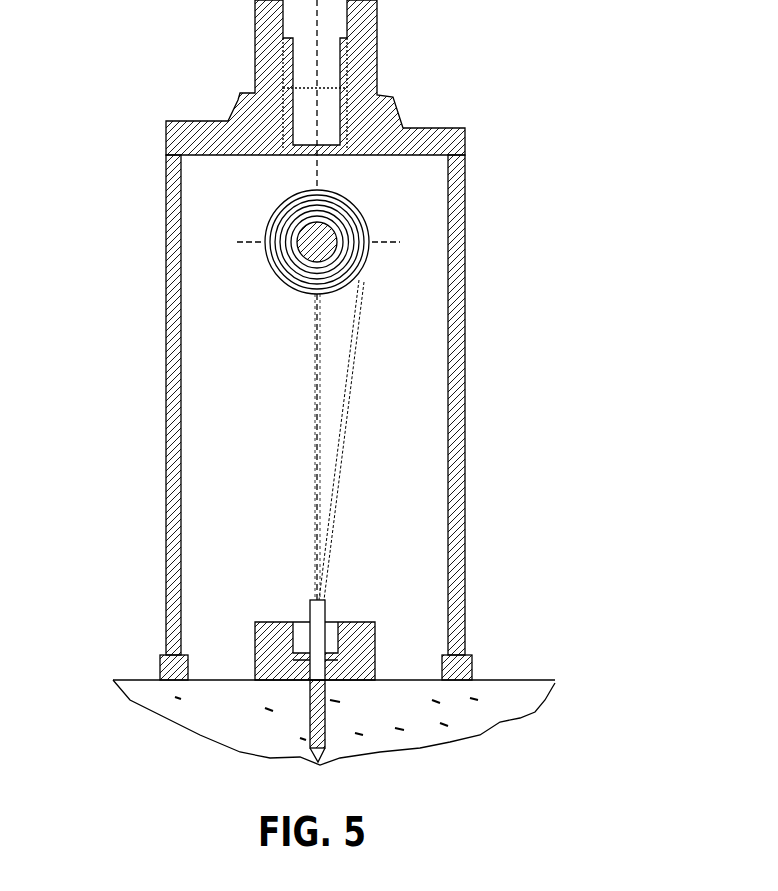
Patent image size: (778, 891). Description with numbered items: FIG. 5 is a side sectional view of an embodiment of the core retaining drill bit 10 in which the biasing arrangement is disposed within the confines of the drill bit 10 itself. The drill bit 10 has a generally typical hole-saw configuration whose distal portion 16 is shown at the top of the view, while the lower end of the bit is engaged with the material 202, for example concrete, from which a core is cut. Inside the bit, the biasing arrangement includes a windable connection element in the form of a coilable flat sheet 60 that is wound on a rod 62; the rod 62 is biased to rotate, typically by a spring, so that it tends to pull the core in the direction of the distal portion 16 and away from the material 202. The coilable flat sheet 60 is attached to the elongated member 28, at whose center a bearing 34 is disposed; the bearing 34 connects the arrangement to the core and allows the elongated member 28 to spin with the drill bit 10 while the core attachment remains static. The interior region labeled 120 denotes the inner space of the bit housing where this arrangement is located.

The core retaining drill bit 10 is at (158, 292).
The distal portion 16 is at (437, 128).
The elongated member 28 is at (310, 598).
The bearing 34 is at (357, 620).
The coilable flat sheet 60 is at (357, 214).
The rod 62 is at (324, 254).
The interior chamber 120 is at (241, 197).
The material 202 is at (507, 695).